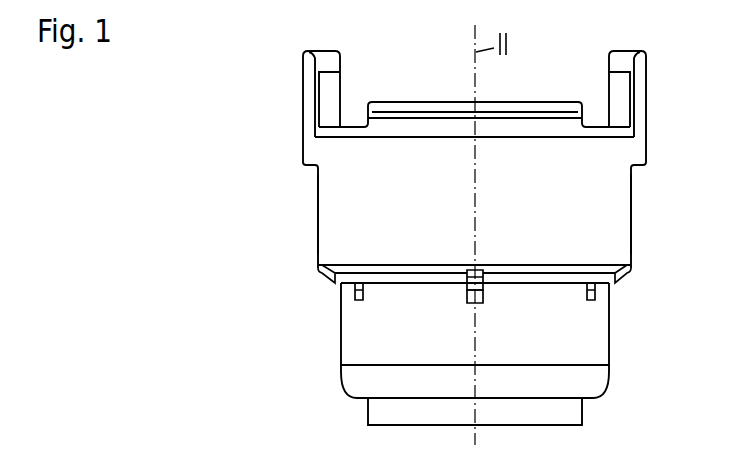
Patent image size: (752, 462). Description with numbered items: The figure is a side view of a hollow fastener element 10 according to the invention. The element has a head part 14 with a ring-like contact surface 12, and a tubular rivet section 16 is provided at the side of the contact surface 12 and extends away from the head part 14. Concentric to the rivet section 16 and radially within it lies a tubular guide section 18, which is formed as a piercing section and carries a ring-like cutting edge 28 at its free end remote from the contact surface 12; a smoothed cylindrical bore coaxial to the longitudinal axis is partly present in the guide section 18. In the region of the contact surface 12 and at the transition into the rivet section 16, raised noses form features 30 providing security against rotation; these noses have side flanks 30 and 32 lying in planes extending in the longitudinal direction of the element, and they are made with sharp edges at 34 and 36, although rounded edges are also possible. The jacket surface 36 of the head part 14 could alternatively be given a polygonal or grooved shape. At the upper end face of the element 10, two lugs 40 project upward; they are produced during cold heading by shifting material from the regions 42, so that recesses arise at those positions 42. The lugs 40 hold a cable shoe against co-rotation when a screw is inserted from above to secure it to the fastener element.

The fastener element 10 is at (633, 227).
The ring-like contact surface 12 is at (537, 277).
The head part 14 is at (318, 210).
The tubular rivet section 16 is at (341, 330).
The tubular guide section 18 is at (368, 410).
The ring-like cutting edge 28 is at (583, 423).
The features providing security against rotation 30 is at (598, 285).
The side flank 32 is at (617, 285).
The sharp edge 34 is at (482, 283).
The jacket surface 36 is at (313, 232).
The lugs 40 is at (668, 76).
The regions 42 is at (633, 197).